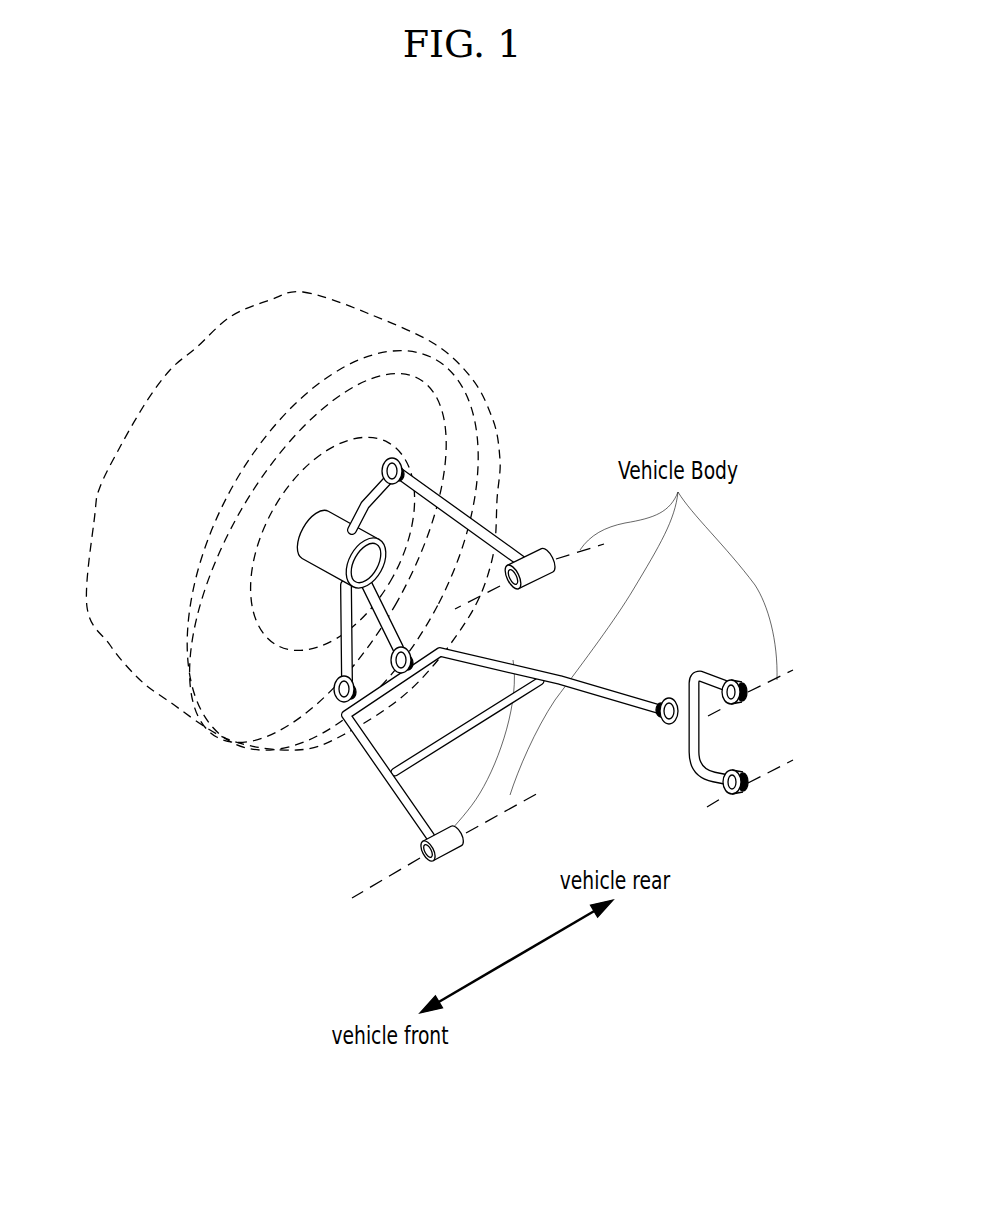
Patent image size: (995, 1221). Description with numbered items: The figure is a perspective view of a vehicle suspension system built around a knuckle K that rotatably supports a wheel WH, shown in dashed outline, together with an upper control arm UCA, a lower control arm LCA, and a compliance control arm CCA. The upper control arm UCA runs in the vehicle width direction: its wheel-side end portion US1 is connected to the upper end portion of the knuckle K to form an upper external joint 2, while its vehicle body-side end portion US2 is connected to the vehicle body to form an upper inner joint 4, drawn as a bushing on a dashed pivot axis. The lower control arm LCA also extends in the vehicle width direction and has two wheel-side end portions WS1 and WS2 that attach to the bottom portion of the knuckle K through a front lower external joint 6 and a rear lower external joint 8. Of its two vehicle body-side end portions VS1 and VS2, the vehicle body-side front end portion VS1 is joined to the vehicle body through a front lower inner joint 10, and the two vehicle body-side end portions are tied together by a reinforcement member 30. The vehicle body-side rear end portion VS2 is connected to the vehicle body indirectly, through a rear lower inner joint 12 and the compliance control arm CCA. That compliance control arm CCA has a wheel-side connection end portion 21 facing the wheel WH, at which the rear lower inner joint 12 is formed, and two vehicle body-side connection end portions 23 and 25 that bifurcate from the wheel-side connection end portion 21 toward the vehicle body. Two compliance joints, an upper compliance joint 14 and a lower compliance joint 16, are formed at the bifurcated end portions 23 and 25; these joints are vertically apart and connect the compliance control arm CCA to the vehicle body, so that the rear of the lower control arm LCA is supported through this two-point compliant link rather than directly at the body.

The knuckle K is at (364, 505).
The wheel WH is at (170, 703).
The upper control arm UCA is at (447, 503).
The lower control arm LCA is at (400, 792).
The compliance control arm CCA is at (695, 727).
The upper external joint 2 is at (385, 462).
The upper inner joint 4 is at (541, 562).
The front lower external joint 6 is at (335, 690).
The rear lower external joint 8 is at (410, 644).
The front lower inner joint 10 is at (450, 850).
The rear lower inner joint 12 is at (673, 702).
The upper compliance joint 14 is at (722, 682).
The lower compliance joint 16 is at (737, 793).
The wheel-side connection end portion 21 is at (667, 723).
The vehicle body-side connection end portion 23 is at (709, 680).
The vehicle body-side connection end portion 25 is at (707, 770).
The reinforcement member 30 is at (427, 856).
The wheel-side end portion US1 is at (426, 457).
The vehicle body-side end portion US2 is at (519, 523).
The wheel-side end portion WS1 is at (335, 730).
The wheel-side end portion WS2 is at (459, 639).
The vehicle body-side front end portion VS1 is at (403, 844).
The vehicle body-side rear end portion VS2 is at (621, 673).